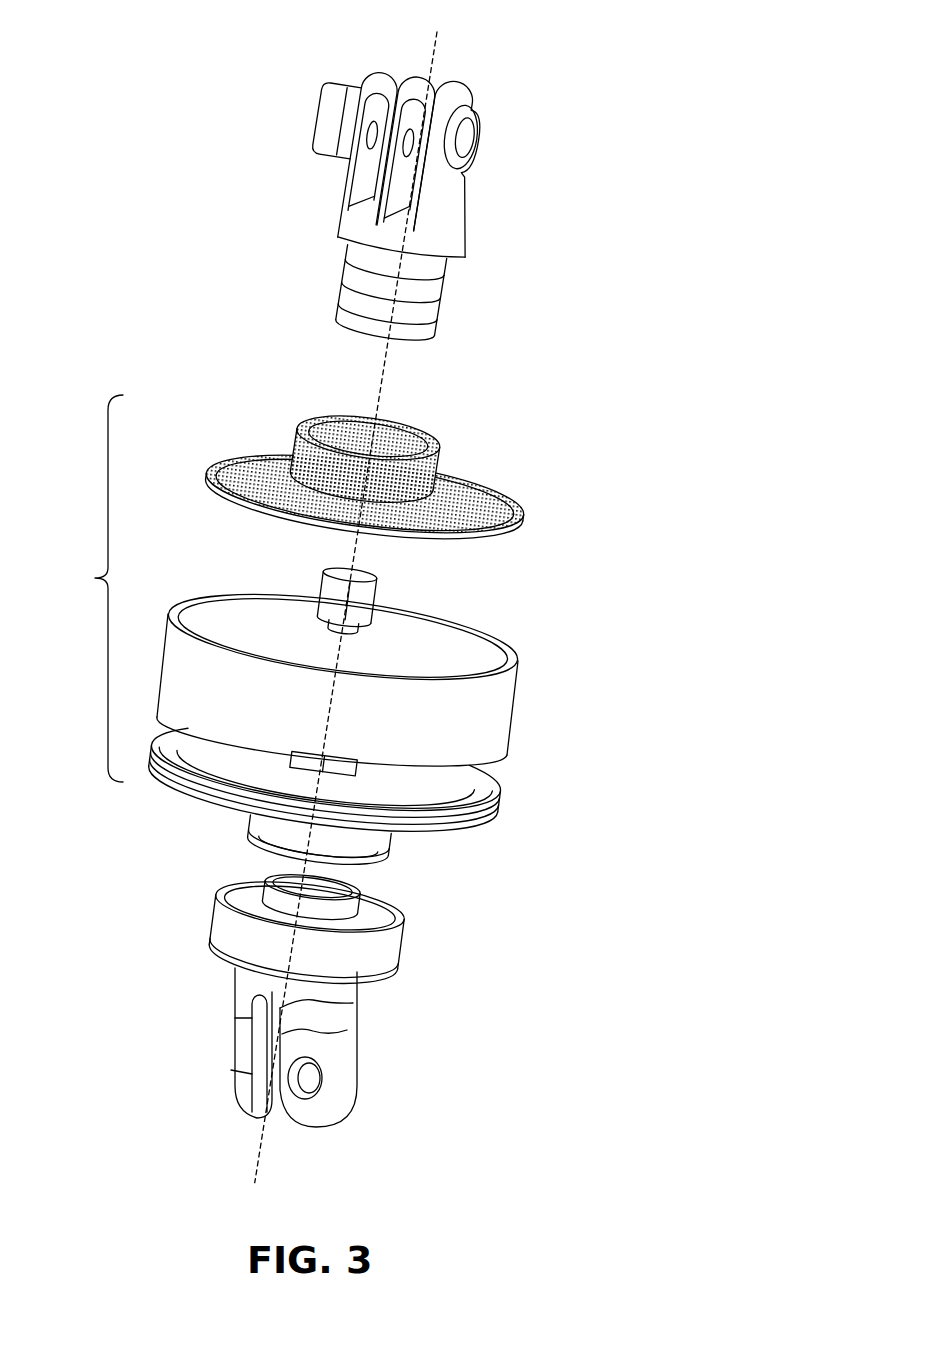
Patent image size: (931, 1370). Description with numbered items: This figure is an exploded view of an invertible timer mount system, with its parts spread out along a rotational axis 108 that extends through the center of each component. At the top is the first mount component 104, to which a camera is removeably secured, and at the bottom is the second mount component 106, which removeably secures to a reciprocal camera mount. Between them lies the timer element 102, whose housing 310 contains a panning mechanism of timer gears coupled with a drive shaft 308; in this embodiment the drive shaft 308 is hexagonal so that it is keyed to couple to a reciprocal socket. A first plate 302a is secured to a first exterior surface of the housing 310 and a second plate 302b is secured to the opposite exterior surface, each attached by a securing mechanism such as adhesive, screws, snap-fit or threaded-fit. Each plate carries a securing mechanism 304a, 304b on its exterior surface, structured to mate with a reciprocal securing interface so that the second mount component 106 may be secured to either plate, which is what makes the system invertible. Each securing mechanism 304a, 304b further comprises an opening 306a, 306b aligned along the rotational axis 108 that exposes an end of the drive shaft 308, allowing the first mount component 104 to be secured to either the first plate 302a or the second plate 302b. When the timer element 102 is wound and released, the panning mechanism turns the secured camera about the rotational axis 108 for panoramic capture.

The timer element 102 is at (91, 595).
The first mount component 104 is at (492, 197).
The second mount component 106 is at (410, 973).
The rotational axis 108 is at (356, 596).
The first plate 302a is at (577, 460).
The second plate 302b is at (152, 787).
The securing mechanism 304a is at (292, 440).
The securing mechanism 304b is at (397, 843).
The opening 306a is at (390, 420).
The opening 306b is at (267, 859).
The drive shaft 308 is at (385, 597).
The housing 310 is at (528, 711).